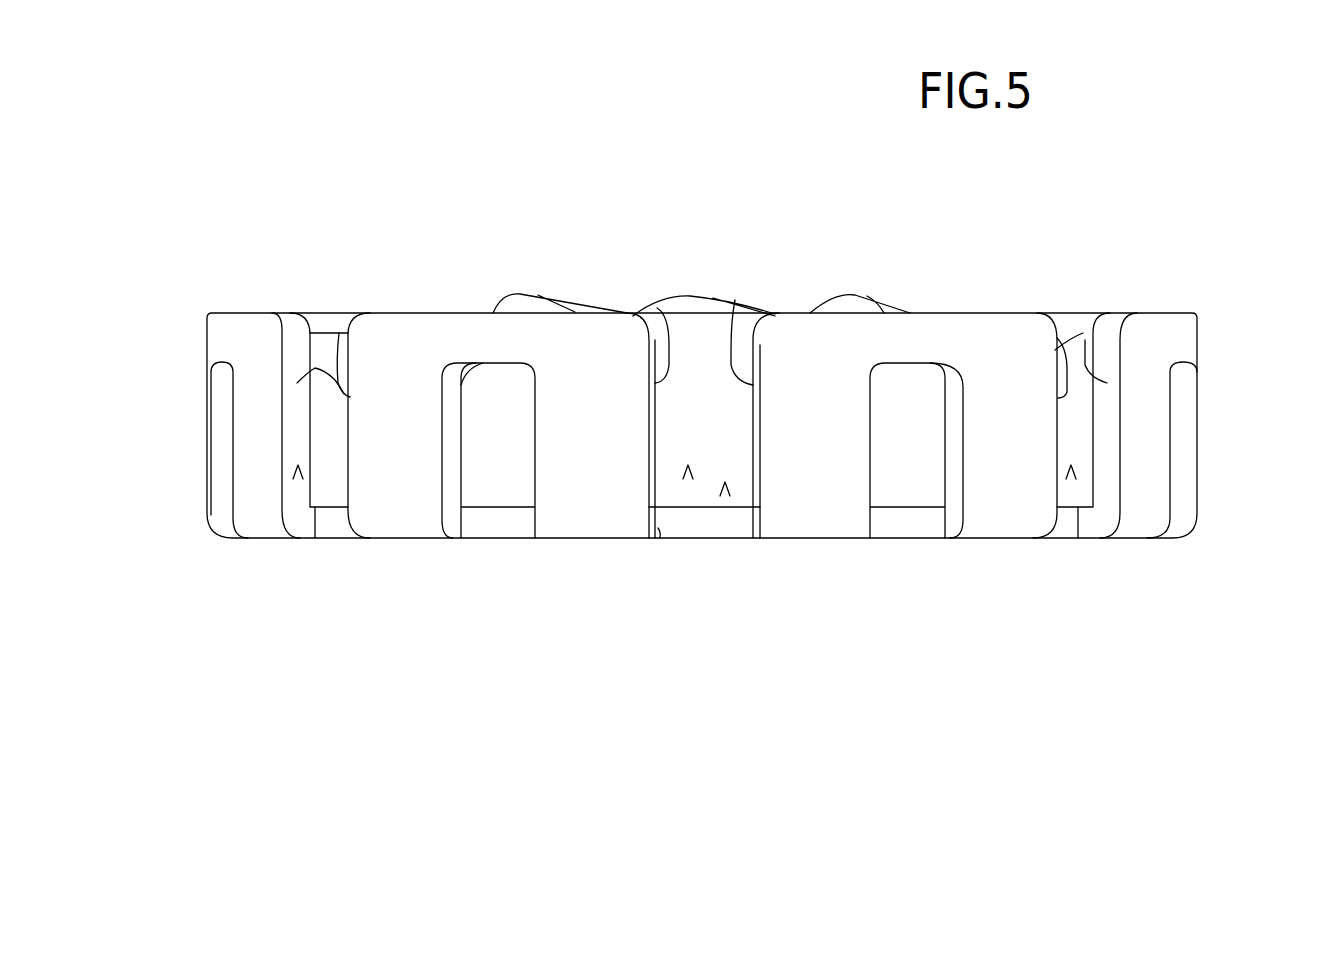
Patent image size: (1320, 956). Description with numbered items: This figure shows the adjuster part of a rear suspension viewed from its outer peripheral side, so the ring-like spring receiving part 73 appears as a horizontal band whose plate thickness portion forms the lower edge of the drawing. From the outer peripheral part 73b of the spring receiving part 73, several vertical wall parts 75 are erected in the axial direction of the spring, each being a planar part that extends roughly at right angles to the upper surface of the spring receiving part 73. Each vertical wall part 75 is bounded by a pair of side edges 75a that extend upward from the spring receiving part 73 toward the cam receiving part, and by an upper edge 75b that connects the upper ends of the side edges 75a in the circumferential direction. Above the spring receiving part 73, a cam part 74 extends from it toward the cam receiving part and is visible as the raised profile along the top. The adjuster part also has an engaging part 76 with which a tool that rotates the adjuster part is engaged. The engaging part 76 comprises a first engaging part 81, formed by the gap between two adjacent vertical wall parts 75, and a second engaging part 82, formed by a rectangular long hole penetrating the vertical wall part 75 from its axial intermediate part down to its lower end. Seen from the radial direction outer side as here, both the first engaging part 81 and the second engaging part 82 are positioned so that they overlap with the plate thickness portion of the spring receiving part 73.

The spring receiving part 73 is at (680, 525).
The outer peripheral part 73b is at (660, 528).
The cam part 74 is at (682, 296).
The vertical wall part 75 is at (250, 338).
The side edges 75a is at (314, 358).
The upper edge 75b is at (227, 313).
The engaging part 76 is at (725, 482).
The first engaging part 81 is at (298, 465).
The second engaging part 82 is at (222, 413).